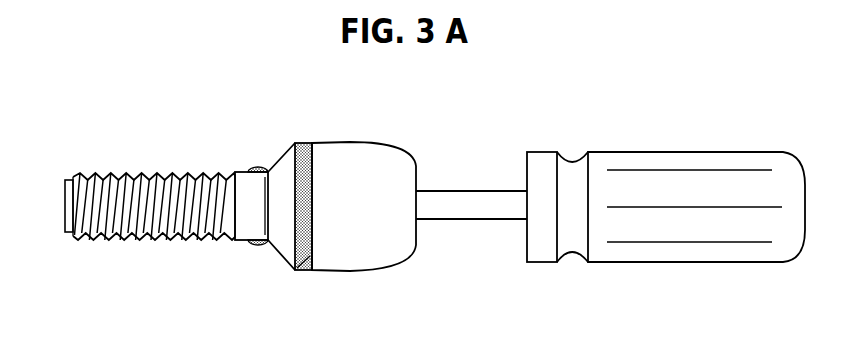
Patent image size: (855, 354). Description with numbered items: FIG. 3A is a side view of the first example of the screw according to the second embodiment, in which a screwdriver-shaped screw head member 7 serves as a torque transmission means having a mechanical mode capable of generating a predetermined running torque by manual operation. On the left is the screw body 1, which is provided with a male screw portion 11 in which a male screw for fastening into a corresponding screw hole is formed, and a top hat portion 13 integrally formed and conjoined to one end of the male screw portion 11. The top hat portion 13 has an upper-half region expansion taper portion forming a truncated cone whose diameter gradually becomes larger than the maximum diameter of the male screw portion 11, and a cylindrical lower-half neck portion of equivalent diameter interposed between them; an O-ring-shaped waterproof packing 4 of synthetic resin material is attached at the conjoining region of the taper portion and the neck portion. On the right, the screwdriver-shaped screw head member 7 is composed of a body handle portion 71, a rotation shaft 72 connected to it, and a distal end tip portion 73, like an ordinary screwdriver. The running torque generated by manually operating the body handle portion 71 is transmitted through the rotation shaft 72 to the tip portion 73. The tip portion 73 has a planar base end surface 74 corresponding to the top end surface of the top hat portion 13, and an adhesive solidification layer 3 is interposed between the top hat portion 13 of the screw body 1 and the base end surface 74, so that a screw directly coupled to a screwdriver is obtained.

The screw body 1 is at (415, 209).
The male screw portion 11 is at (152, 172).
The top hat portion 13 is at (282, 156).
The waterproof packing 4 is at (255, 163).
The adhesive solidification layer 3 is at (305, 143).
The base end surface 74 is at (302, 271).
The tip portion 73 is at (365, 145).
The rotation shaft 72 is at (468, 191).
The body handle portion 71 is at (688, 152).
The screwdriver-shaped screw head member 7 is at (558, 184).